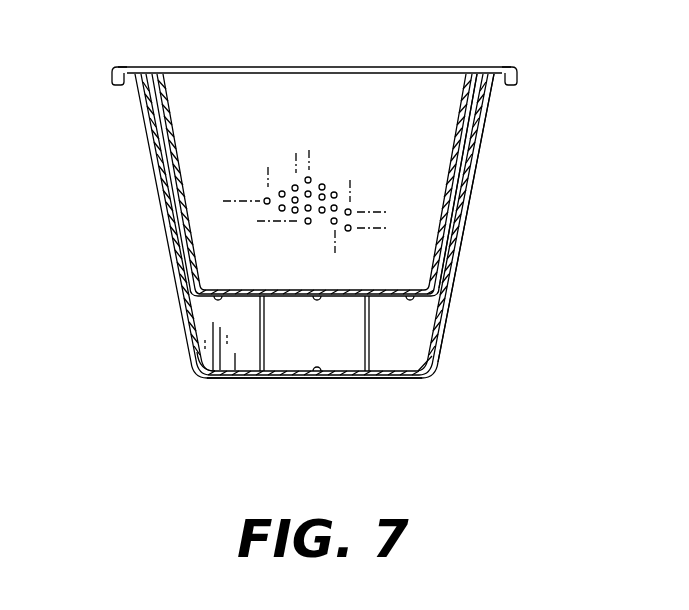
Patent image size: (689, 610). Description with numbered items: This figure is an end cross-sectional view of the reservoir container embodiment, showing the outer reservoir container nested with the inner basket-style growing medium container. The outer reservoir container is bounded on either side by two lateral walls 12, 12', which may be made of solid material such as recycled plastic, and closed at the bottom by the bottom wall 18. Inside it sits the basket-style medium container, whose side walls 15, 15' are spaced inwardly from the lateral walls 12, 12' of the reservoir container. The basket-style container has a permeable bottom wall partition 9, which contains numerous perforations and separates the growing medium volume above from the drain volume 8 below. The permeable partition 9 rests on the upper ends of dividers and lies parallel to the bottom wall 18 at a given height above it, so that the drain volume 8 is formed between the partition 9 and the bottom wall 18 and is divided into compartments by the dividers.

The lateral wall 12 is at (282, 226).
The lateral wall 12' is at (493, 218).
The side wall 15 is at (288, 187).
The side wall 15' is at (494, 181).
The permeable bottom wall partition 9 is at (272, 289).
The drain volume 8 is at (198, 318).
The bottom wall 18 is at (241, 378).